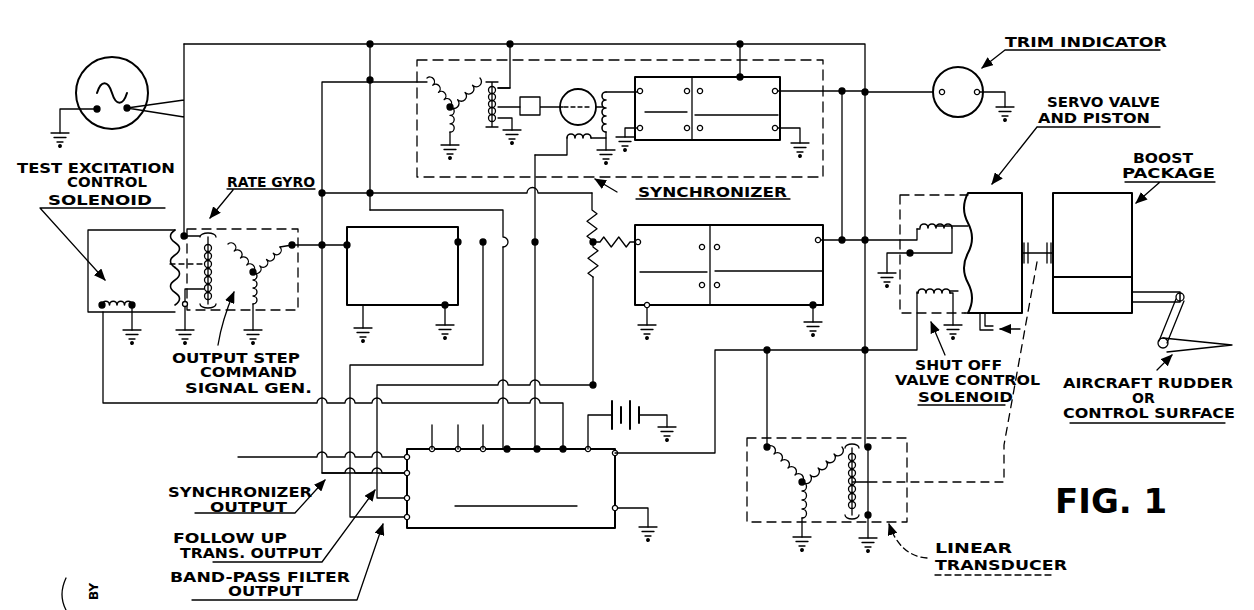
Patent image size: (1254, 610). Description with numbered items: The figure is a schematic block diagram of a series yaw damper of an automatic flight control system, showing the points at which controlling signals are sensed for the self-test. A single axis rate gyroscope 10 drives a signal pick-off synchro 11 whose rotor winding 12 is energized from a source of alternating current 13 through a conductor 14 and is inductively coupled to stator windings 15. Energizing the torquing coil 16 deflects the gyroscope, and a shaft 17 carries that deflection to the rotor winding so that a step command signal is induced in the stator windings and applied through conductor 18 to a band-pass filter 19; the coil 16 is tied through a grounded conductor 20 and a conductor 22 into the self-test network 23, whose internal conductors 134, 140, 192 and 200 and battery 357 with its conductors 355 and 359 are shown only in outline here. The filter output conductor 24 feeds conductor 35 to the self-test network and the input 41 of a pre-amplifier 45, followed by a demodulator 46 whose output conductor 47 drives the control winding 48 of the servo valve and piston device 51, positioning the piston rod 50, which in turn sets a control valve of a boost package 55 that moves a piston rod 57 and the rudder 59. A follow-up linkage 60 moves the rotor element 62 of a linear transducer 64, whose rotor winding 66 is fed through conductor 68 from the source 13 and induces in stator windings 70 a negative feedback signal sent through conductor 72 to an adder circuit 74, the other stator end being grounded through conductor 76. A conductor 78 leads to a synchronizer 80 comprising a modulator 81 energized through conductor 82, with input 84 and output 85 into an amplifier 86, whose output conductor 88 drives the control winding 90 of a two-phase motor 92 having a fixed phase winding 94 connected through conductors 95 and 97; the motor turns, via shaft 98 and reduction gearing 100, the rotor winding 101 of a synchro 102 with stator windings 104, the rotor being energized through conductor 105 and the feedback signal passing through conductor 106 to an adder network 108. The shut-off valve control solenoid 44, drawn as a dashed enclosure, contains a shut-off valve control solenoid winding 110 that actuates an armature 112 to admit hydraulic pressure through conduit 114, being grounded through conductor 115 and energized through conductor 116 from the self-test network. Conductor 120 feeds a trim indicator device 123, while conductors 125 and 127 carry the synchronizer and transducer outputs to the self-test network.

The single axis rate gyroscope 10 is at (197, 214).
The signal pick-off synchro 11 is at (224, 236).
The rotor winding 12 is at (174, 252).
The source of alternating current 13 is at (82, 76).
The conductor 14 is at (184, 133).
The stator windings 15 is at (263, 290).
The control solenoid or torquing coil 16 is at (100, 304).
The shaft 17 is at (176, 286).
The conductor 18 is at (333, 240).
The band-pass filter 19 is at (438, 309).
The grounded conductor 20 is at (134, 323).
The conductor 22 is at (130, 410).
The self-test network 23 is at (519, 531).
The output conductor 24 is at (490, 228).
The conductor 35 is at (418, 362).
The input 41 is at (641, 240).
The shut off valve control solenoid 44 is at (953, 217).
The pre-amplifier 45 is at (673, 307).
The demodulator 46 is at (740, 307).
The output conductor 47 is at (858, 244).
The control winding 48 is at (930, 217).
The piston rod 50 is at (1036, 235).
The servo valve and piston device 51 is at (993, 253).
The boost package 55 is at (1092, 253).
The piston rod 57 is at (1153, 292).
The rudder 59 is at (1190, 337).
The follow-up linkage 60 is at (1012, 448).
The rotor element 62 is at (851, 518).
The linear transducer 64 is at (817, 433).
The rotor winding 66 is at (858, 480).
The conductor 68 is at (630, 43).
The stator windings 70 is at (798, 503).
The conductor 72 is at (630, 383).
The adder circuit 74 is at (590, 264).
The electrical conductor 76 is at (800, 527).
The conductor 78 is at (830, 211).
The synchronizer 80 is at (832, 76).
The modulator 81 is at (738, 141).
The conductor 82 is at (743, 50).
The input 84 is at (779, 91).
The output 85 is at (698, 91).
The amplifier 86 is at (662, 139).
The output conductor 88 is at (605, 91).
The control winding 90 is at (596, 79).
The two-phase motor 92 is at (563, 122).
The fixed phase winding 94 is at (578, 146).
The conductor 95 is at (538, 333).
The conductor 97 is at (508, 307).
The shaft 98 is at (574, 92).
The reduction gearing 100 is at (533, 96).
The rotor winding 101 is at (488, 118).
The synchro 102 is at (490, 78).
The stator windings 104 is at (431, 92).
The conductor 105 is at (515, 53).
The conductor 106 is at (320, 93).
The adder network 108 is at (604, 231).
The shut-off valve control solenoid winding 110 is at (930, 288).
The armature 112 is at (944, 289).
The conduit 114 is at (982, 331).
The conductor 115 is at (966, 312).
The electrical conductor 116 is at (645, 455).
The conductor 120 is at (893, 92).
The indicator device 123 is at (985, 88).
The conductor 125 is at (322, 327).
The conductor 127 is at (417, 385).
The conductor 134 is at (270, 455).
The conductor 140 is at (432, 437).
The conductor 192 is at (458, 437).
The conductor 200 is at (496, 425).
The electrical conductor 355 is at (591, 436).
The battery 357 is at (639, 404).
The electrical conductor 359 is at (669, 421).